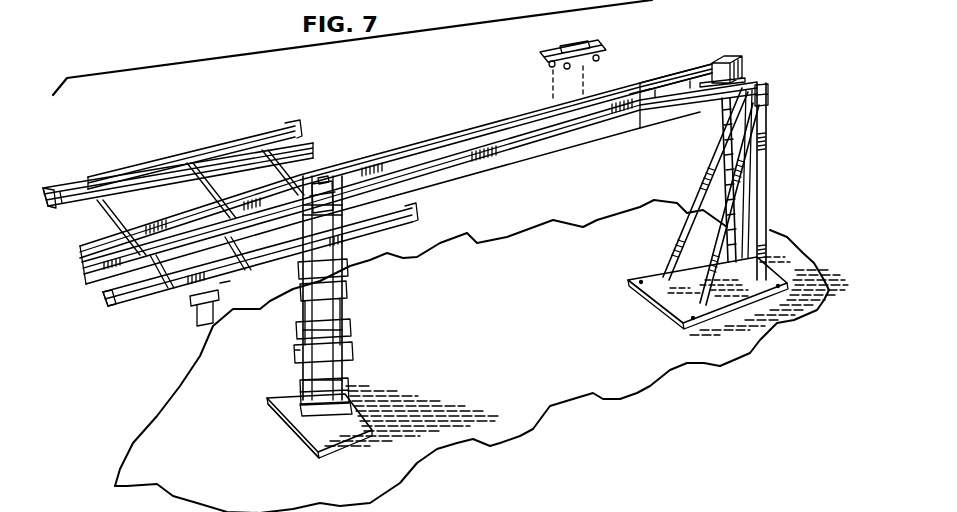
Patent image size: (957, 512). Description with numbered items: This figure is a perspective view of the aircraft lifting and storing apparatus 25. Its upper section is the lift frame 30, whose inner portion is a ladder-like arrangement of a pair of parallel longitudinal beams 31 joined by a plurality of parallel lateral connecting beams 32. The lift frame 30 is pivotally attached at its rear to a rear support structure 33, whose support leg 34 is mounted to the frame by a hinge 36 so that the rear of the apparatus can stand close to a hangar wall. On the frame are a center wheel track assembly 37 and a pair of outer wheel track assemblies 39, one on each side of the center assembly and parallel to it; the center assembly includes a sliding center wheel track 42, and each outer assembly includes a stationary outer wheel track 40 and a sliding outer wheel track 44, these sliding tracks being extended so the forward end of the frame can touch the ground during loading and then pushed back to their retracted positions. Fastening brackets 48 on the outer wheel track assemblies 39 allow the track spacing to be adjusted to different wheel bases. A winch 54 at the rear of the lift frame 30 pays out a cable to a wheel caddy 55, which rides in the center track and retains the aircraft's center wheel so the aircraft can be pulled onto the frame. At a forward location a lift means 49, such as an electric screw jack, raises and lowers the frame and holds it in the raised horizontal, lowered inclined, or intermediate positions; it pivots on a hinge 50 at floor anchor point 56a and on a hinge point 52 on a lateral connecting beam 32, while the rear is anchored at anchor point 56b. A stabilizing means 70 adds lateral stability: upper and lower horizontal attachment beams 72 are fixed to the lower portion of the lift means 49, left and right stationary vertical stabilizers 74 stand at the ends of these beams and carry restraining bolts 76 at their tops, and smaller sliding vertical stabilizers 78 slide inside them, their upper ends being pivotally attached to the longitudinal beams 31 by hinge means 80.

The apparatus 25 is at (167, 197).
The lift frame 30 is at (423, 127).
The longitudinal beams 31 is at (690, 40).
The lateral connecting beams 32 is at (633, 90).
The rear support structure 33 is at (642, 239).
The support leg 34 is at (770, 205).
The hinge 36 is at (770, 97).
The center wheel track assembly 37 is at (127, 256).
The outer wheel track assemblies 39 is at (115, 162).
The stationary outer wheel track 40 is at (152, 175).
The sliding center wheel track 42 is at (80, 252).
The sliding outer wheel track 44 is at (77, 182).
The fastening brackets 48 is at (213, 300).
The lift means 49 is at (351, 346).
The hinge 50 is at (307, 453).
The hinge point 52 is at (325, 183).
The winch 54 is at (737, 53).
The wheel caddy 55 is at (553, 47).
The anchor point 56a is at (325, 457).
The anchor point 56b is at (680, 296).
The stabilizing means 70 is at (347, 373).
The horizontal attachment beams 72 is at (347, 329).
The stationary vertical stabilizers 74 is at (347, 359).
The restraining bolts 76 is at (340, 294).
The sliding vertical stabilizers 78 is at (340, 268).
The hinge means 80 is at (403, 200).